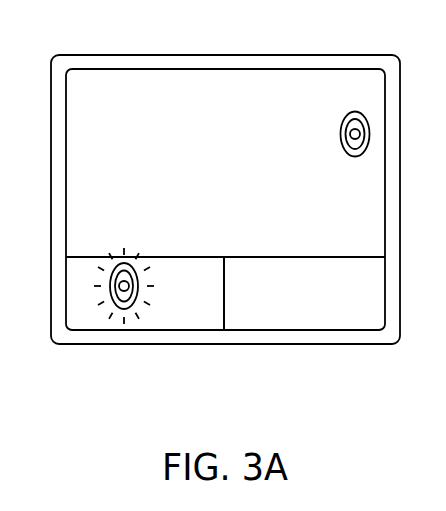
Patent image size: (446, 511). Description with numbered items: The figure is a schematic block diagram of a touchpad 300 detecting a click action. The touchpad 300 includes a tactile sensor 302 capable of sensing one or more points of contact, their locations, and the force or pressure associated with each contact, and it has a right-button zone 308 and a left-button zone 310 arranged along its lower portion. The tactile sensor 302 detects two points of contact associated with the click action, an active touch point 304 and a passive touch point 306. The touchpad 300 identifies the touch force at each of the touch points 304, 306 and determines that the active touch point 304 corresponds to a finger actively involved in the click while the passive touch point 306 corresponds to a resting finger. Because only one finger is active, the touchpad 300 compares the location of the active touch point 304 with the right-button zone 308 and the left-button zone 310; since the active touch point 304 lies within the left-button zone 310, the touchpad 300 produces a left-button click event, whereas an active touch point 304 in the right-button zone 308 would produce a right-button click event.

The touchpad 300 is at (132, 33).
The tactile sensor 302 is at (110, 100).
The active touch point 304 is at (106, 252).
The passive touch point 306 is at (347, 166).
The right-button zone 308 is at (375, 320).
The left-button zone 310 is at (215, 320).